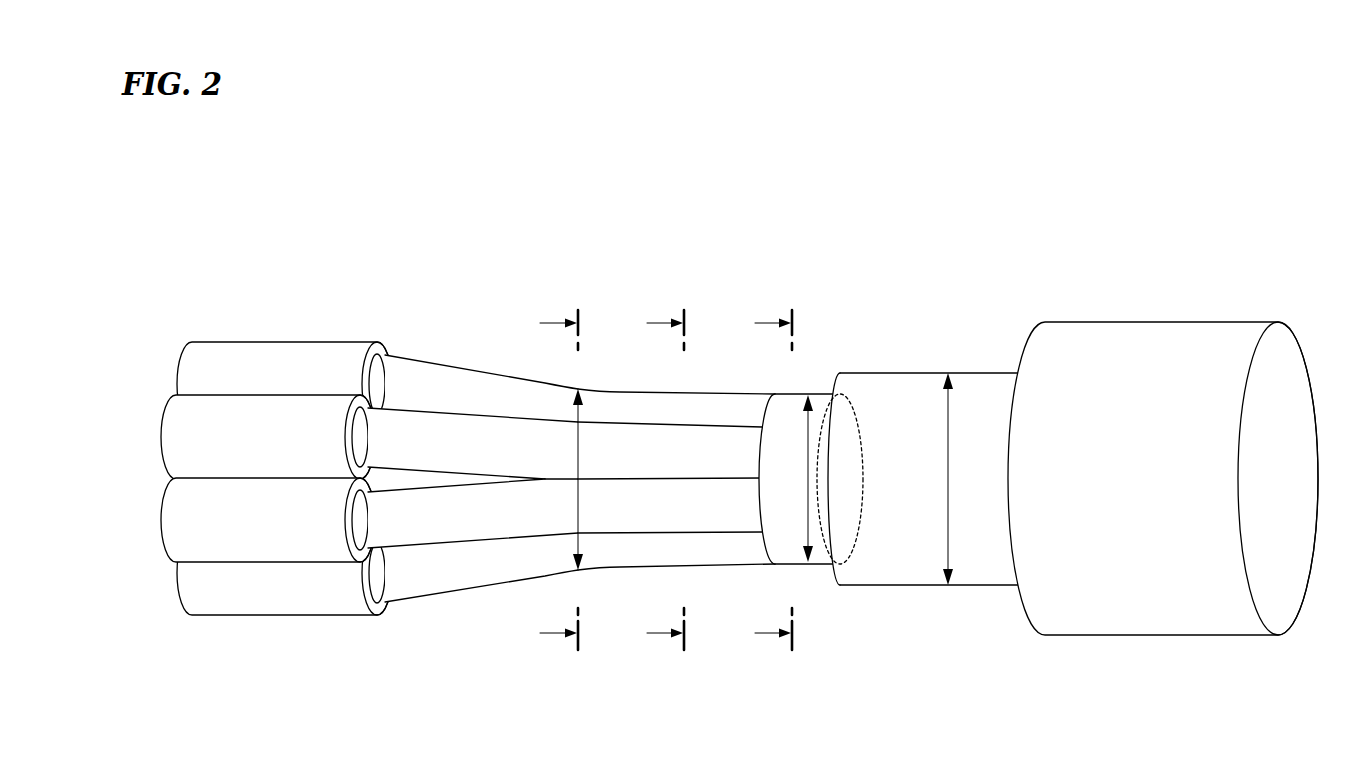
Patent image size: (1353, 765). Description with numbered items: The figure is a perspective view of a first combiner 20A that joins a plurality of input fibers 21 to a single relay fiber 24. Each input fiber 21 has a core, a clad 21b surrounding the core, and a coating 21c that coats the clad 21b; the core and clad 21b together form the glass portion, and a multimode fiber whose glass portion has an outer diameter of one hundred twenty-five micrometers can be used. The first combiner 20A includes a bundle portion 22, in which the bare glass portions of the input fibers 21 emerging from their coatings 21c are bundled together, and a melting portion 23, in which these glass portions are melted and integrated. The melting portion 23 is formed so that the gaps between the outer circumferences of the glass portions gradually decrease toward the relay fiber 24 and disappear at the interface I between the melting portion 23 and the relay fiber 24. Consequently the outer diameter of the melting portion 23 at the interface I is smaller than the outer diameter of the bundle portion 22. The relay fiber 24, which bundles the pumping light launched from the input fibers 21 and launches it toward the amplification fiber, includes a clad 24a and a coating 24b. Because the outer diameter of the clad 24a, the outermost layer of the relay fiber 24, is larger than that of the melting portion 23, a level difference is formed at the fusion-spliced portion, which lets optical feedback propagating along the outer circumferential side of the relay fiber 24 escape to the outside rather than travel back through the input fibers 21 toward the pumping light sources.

The first combiner 20A is at (739, 387).
The input fiber 21 is at (369, 399).
The clad 21b is at (445, 374).
The coating 21c is at (254, 351).
The bundle portion 22 is at (707, 415).
The melting portion 23 is at (788, 404).
The relay fiber 24 is at (1067, 415).
The clad 24a is at (918, 472).
The coating 24b is at (1158, 341).
The interface I is at (857, 542).